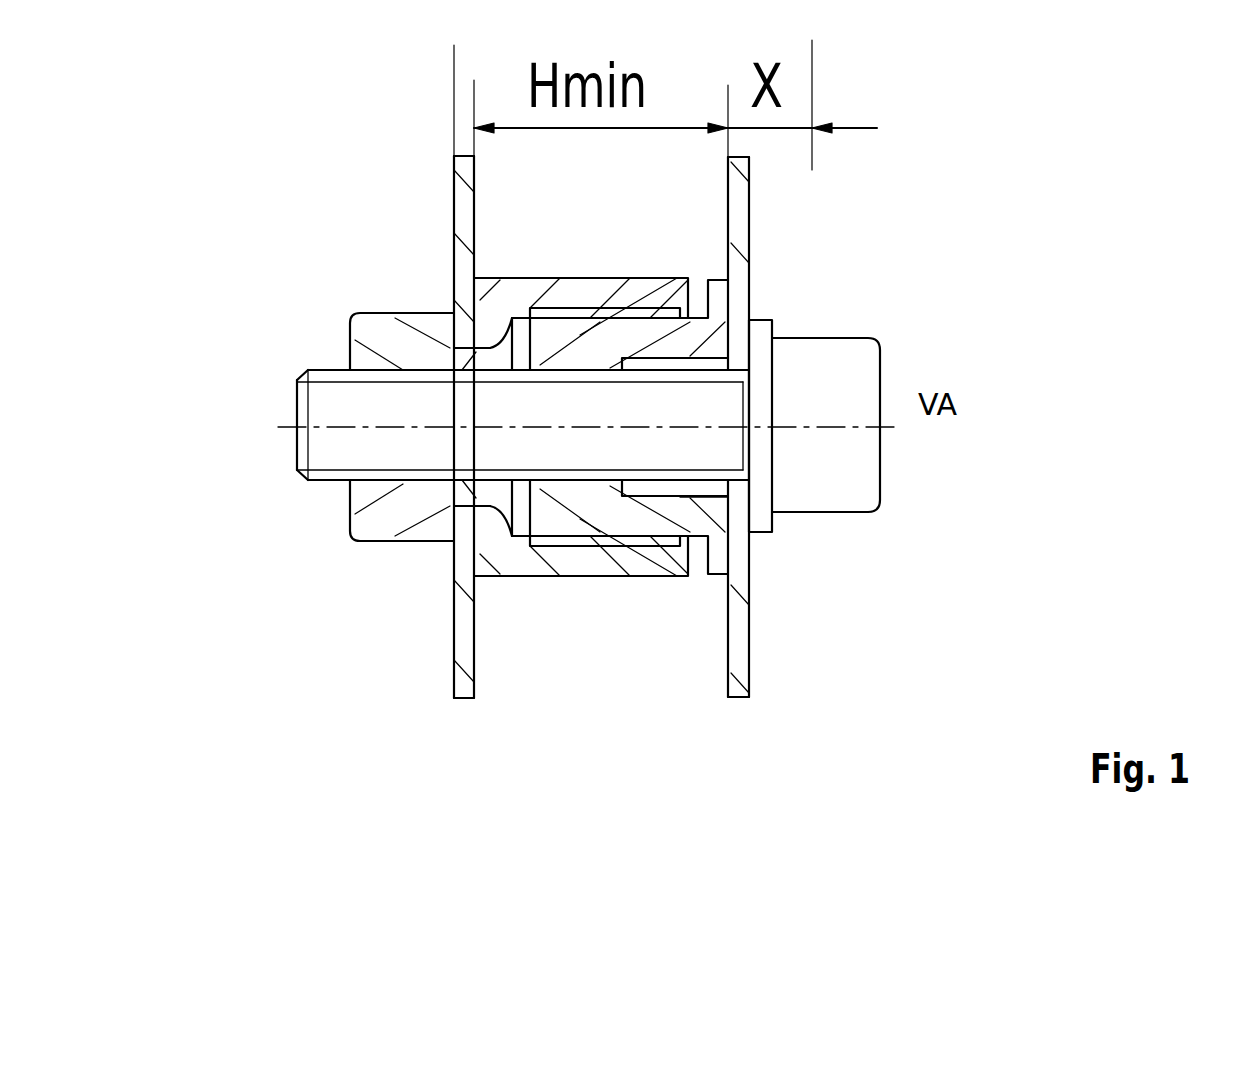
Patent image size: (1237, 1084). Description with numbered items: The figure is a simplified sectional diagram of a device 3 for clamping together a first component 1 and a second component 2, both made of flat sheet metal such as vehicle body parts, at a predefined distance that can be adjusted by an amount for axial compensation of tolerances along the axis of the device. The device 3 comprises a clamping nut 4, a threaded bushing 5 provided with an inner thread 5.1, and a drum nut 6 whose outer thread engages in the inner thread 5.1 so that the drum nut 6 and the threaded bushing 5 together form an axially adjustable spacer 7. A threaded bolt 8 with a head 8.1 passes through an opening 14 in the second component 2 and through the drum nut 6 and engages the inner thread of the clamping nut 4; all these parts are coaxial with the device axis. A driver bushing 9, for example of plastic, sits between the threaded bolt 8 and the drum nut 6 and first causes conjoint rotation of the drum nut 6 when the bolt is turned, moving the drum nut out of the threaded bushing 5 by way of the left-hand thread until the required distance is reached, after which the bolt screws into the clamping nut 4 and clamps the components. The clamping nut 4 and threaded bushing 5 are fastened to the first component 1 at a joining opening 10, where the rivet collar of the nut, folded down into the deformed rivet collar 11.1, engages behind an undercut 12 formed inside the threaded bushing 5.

The first component 1 is at (462, 687).
The second component 2 is at (748, 697).
The device 3 is at (333, 268).
The clamping nut 4 is at (348, 518).
The threaded bushing 5 is at (645, 298).
The inner thread 5.1 is at (610, 538).
The drum nut 6 is at (707, 335).
The axially adjustable spacer 7 is at (565, 600).
The threaded bolt 8 is at (335, 402).
The head 8.1 is at (860, 475).
The driver bushing 9 is at (700, 497).
The joining opening 10 is at (457, 511).
The deformed rivet collar 11.1 is at (490, 342).
The undercut 12 is at (485, 322).
The opening 14 is at (733, 493).